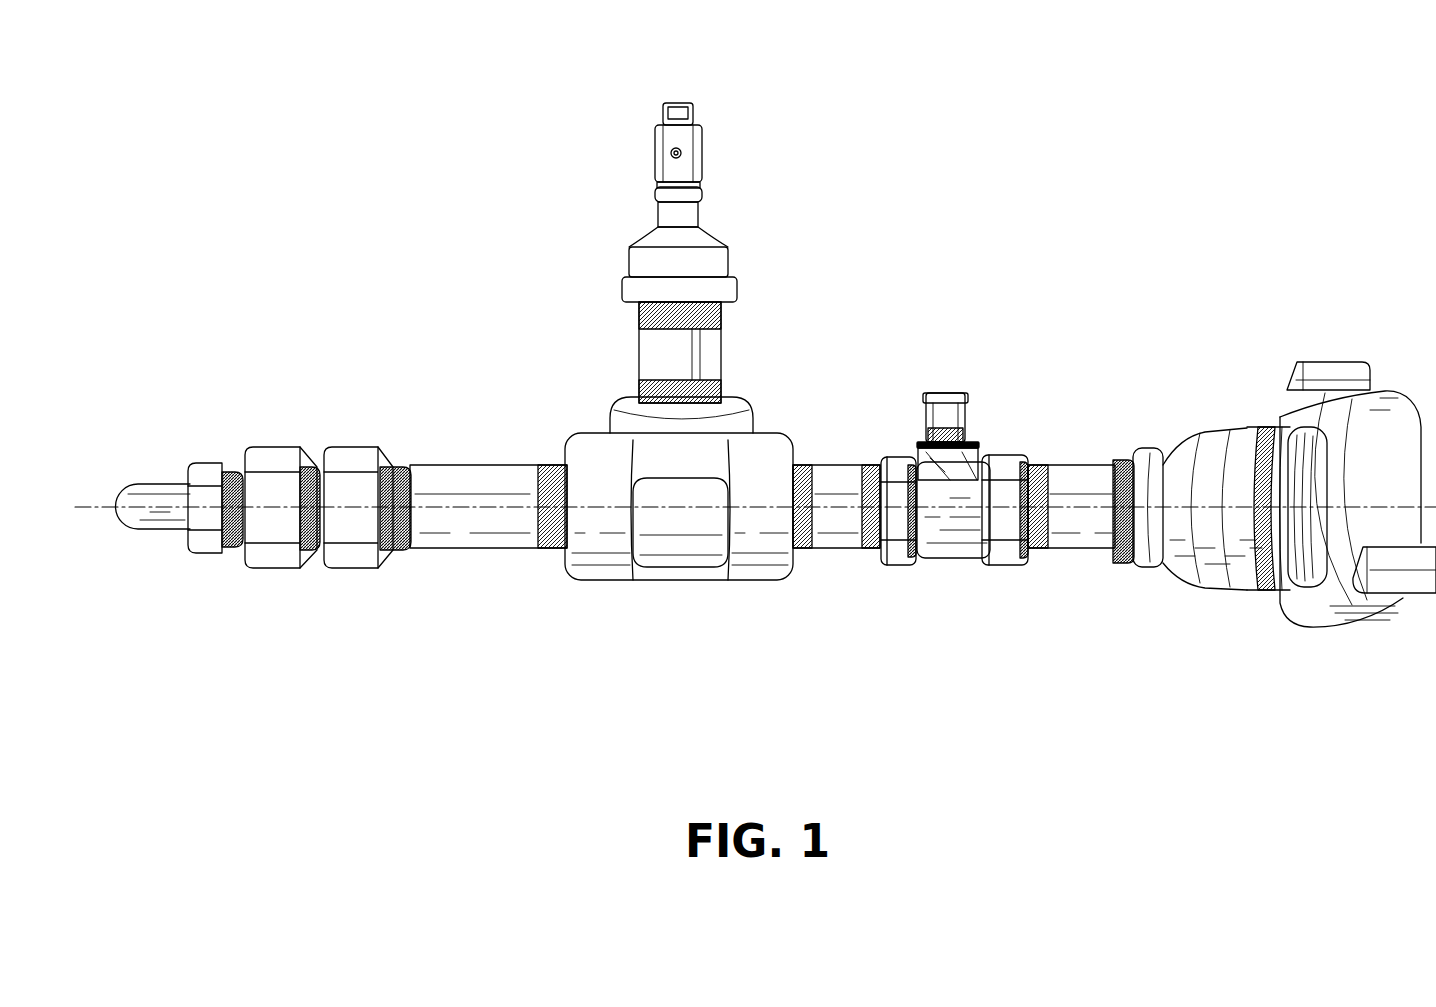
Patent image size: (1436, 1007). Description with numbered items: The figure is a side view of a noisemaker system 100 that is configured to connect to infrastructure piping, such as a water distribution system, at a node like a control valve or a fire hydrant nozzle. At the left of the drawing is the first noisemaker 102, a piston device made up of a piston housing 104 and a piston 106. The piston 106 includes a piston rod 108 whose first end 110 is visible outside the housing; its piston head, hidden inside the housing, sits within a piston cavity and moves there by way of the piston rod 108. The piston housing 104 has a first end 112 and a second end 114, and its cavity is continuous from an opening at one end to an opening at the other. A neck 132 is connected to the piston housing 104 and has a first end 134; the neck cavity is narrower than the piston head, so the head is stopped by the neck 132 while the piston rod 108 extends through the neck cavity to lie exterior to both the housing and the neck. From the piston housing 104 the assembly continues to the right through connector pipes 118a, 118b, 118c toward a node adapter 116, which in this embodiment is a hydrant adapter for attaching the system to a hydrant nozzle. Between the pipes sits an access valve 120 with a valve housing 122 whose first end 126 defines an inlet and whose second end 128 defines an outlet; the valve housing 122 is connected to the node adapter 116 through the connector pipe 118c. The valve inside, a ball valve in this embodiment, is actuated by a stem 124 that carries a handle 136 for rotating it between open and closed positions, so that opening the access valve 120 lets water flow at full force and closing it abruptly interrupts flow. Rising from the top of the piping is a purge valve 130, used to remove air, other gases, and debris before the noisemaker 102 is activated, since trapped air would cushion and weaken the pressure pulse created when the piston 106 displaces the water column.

The noisemaker system 100 is at (440, 268).
The first noisemaker 102 is at (323, 603).
The piston housing 104 is at (342, 450).
The piston 106 is at (157, 520).
The piston rod 108 is at (157, 497).
The first end 110 is at (113, 517).
The first end 112 is at (257, 450).
The second end 114 is at (388, 557).
The node adapter 116 is at (1307, 612).
The connector pipe 118a is at (478, 478).
The connector pipe 118b is at (842, 462).
The connector pipe 118c is at (1073, 467).
The access valve 120 is at (937, 458).
The valve housing 122 is at (940, 557).
The stem 124 is at (925, 417).
The first end 126 is at (1033, 550).
The second end 128 is at (880, 557).
The purge valve 130 is at (693, 145).
The neck 132 is at (247, 553).
The first end 134 is at (188, 537).
The handle 136 is at (945, 388).